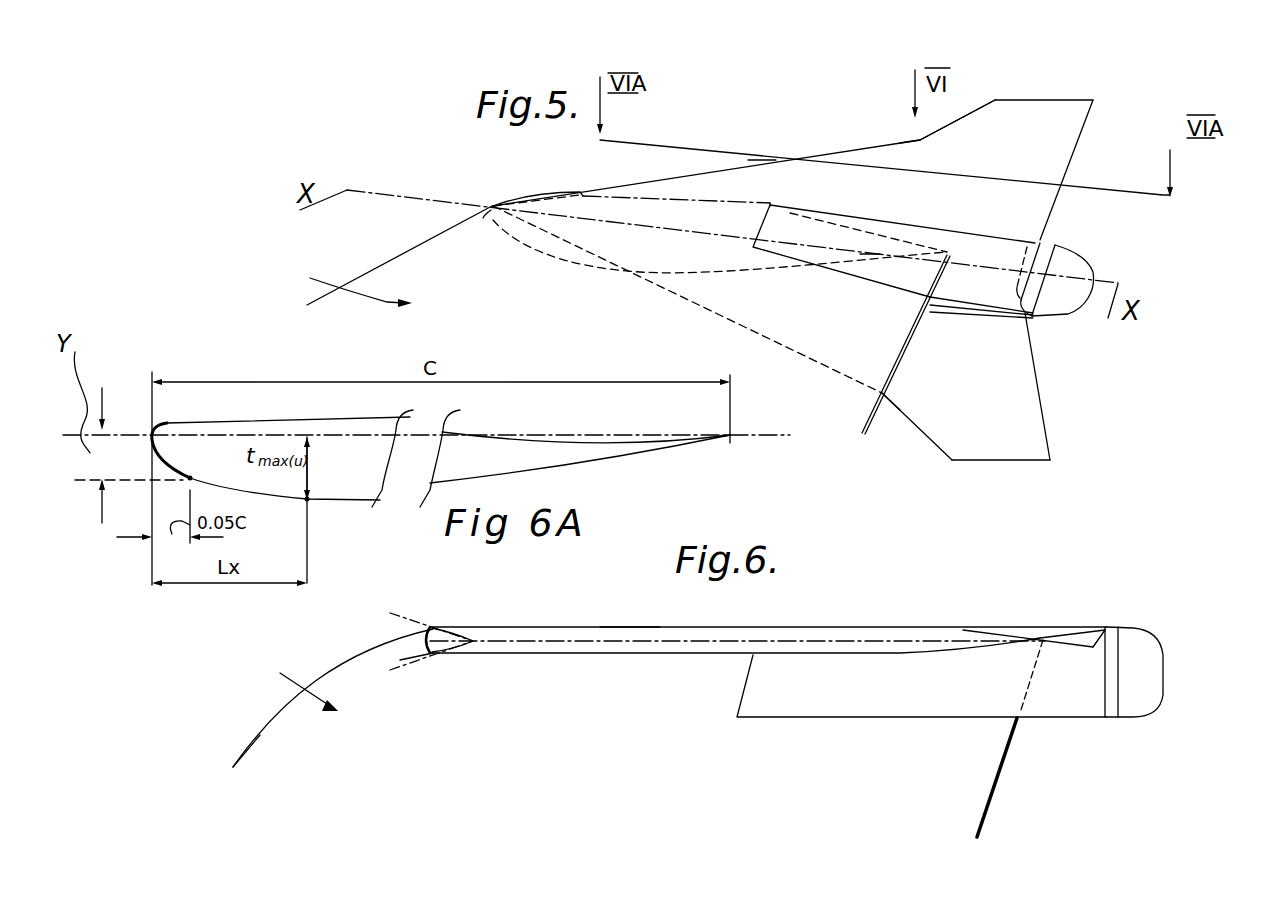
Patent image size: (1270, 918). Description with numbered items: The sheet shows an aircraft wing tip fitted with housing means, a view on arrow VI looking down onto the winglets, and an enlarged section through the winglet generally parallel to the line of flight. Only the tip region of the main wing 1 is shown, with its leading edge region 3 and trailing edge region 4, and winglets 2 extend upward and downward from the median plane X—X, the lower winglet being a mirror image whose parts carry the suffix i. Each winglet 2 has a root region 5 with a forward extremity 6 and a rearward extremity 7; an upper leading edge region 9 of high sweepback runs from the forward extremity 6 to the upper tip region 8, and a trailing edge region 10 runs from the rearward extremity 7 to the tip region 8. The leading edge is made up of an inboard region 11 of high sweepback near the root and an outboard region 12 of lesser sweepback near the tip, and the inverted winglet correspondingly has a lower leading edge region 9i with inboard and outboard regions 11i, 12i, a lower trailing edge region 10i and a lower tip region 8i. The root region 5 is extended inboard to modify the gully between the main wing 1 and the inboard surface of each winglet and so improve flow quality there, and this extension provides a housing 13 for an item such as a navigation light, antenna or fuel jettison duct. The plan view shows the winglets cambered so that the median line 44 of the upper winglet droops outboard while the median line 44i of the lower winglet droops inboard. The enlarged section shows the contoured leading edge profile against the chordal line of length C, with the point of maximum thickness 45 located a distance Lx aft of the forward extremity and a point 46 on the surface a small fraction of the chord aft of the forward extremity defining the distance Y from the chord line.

In FIG. 5, the main wing 1 is at (356, 285).
In FIG. 6, the main wing 1 is at (333, 698).
In FIG. 5, the winglet 2 is at (667, 182).
In FIG. 6A, the winglet 2 is at (223, 447).
In FIG. 6, the winglet 2 is at (762, 632).
In FIG. 5, the leading edge region 3 is at (410, 256).
In FIG. 6, the leading edge region 3 is at (256, 752).
In FIG. 5, the trailing edge region 4 is at (893, 352).
In FIG. 6, the trailing edge region 4 is at (997, 790).
In FIG. 5, the root region 5 is at (770, 203).
In FIG. 5, the forward extremity 6 is at (493, 206).
In FIG. 5, the rearward extremity 7 is at (1045, 229).
In FIG. 6, the rearward extremity 7 is at (950, 672).
In FIG. 5, the upper tip region 8 is at (1045, 110).
In FIG. 5, the upper leading edge region 9 is at (908, 126).
In FIG. 6A, the upper leading edge region 9 is at (168, 425).
In FIG. 6, the upper leading edge region 9 is at (441, 627).
In FIG. 5, the trailing edge region 10 is at (1073, 160).
In FIG. 6A, the trailing edge region 10 is at (697, 435).
In FIG. 6, the trailing edge region 10 is at (1060, 630).
In FIG. 5, the inboard region 11 is at (762, 160).
In FIG. 5, the outboard region 12 is at (970, 113).
In FIG. 5, the housing 13 is at (866, 256).
In FIG. 6, the housing 13 is at (1017, 688).
In FIG. 5, the lower tip region 8i is at (1000, 453).
In FIG. 5, the lower leading edge region 9i is at (889, 414).
In FIG. 6, the lower leading edge region 9i is at (430, 631).
In FIG. 5, the lower trailing edge region 10i is at (1043, 395).
In FIG. 6, the lower trailing edge region 10i is at (1110, 628).
In FIG. 5, the lower inboard region 11i is at (758, 335).
In FIG. 5, the lower outboard region 12i is at (930, 440).
In FIG. 6, the median line 44 is at (632, 630).
In FIG. 6, the lower median line 44i is at (403, 662).
In FIG. 6A, the point of maximum distance 45 is at (310, 503).
In FIG. 6A, the profile surface point 46 is at (187, 481).